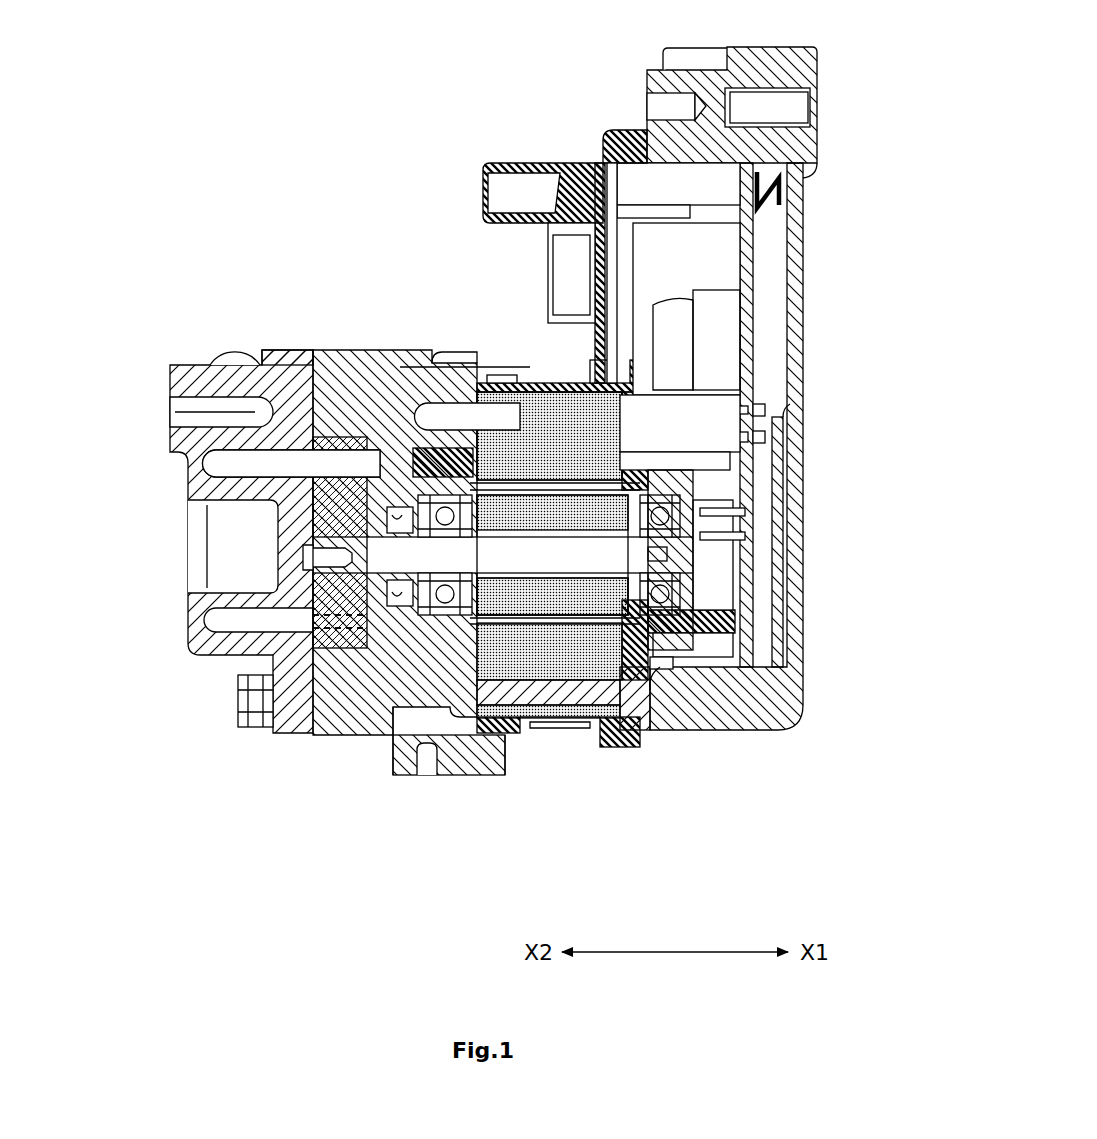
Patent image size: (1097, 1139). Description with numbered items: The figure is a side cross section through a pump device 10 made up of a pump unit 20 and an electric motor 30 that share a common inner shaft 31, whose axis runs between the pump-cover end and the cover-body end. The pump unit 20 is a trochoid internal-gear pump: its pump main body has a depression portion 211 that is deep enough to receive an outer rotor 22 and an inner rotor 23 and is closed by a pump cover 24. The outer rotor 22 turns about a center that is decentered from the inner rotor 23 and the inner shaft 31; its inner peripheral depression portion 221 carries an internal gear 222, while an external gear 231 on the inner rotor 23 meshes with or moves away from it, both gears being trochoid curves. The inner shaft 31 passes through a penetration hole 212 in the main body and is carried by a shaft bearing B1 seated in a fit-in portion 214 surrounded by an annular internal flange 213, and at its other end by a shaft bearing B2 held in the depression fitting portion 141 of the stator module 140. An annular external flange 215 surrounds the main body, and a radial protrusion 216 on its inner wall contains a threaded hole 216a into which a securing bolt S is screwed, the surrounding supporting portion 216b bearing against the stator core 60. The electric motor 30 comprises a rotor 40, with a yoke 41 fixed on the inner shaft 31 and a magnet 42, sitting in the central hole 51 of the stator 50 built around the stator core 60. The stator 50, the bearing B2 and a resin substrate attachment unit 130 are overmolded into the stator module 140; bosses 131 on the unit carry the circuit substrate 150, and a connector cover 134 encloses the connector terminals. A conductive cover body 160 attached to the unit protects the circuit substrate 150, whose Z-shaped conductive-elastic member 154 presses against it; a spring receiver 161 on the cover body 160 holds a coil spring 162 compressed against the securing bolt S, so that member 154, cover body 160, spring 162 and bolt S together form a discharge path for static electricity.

The pump device 10 is at (415, 235).
The pump unit 20 is at (292, 745).
The depression portion 211 is at (330, 497).
The penetration hole 212 is at (380, 540).
The annular internal flange 213 is at (428, 600).
The fit-in portion 214 is at (380, 385).
The annular external flange 215 is at (488, 362).
The radial protrusion 216 is at (395, 440).
The threaded hole 216a is at (415, 760).
The supporting portion 216b is at (503, 735).
The outer rotor 22 is at (340, 440).
The inner peripheral depression portion 221 is at (258, 410).
The internal gear 222 is at (310, 402).
The inner rotor 23 is at (330, 513).
The external gear 231 is at (328, 605).
The pump cover 24 is at (195, 622).
The electric motor 30 is at (577, 732).
The inner shaft 31 is at (503, 362).
The rotor 40 is at (573, 505).
The yoke 41 is at (450, 378).
The magnet 42 is at (567, 620).
The stator 50 is at (555, 722).
The central hole 51 is at (515, 708).
The stator core 60 is at (560, 386).
The substrate attachment unit 130 is at (770, 272).
The boss 131 is at (665, 185).
The connector cover 134 is at (510, 165).
The stator module 140 is at (630, 760).
The depression fitting portion 141 is at (660, 533).
The circuit substrate 150 is at (758, 352).
The conductive-elastic member 154 is at (785, 192).
The cover body 160 is at (812, 398).
The spring receiver 161 is at (690, 690).
The coil spring 162 is at (657, 672).
The shaft bearing B1 is at (440, 612).
The shaft bearing B2 is at (665, 577).
The securing bolt S is at (590, 692).